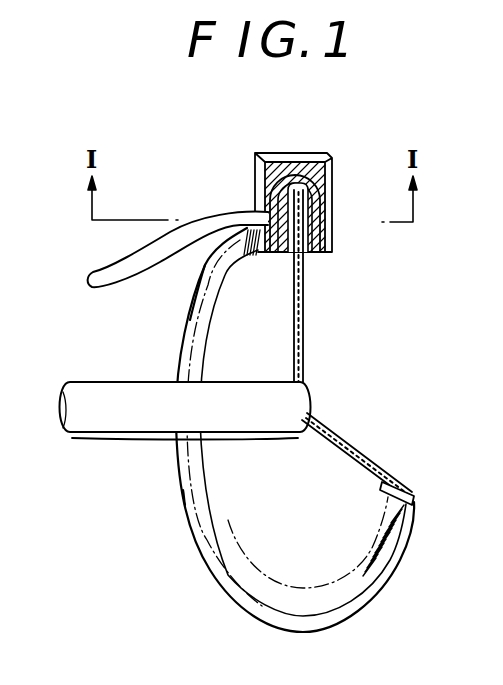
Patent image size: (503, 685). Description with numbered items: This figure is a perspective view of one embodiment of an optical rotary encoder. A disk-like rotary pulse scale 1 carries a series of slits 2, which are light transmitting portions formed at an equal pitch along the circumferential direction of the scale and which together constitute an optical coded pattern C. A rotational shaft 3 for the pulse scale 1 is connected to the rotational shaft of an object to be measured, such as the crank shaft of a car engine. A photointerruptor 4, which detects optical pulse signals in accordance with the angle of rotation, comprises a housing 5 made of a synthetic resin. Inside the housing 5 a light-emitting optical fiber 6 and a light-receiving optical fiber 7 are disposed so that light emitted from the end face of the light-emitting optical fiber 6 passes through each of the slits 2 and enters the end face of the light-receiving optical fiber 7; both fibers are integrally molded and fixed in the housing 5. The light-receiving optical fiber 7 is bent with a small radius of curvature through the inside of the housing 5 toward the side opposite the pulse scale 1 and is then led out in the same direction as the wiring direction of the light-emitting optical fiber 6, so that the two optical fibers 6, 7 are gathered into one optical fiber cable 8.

The rotary pulse scale 1 is at (214, 589).
The slits 2 is at (397, 482).
The rotational shaft 3 is at (140, 443).
The photointerruptor 4 is at (315, 148).
The housing 5 is at (333, 217).
The light-emitting optical fiber 6 is at (273, 262).
The light-receiving optical fiber 7 is at (316, 255).
The optical fiber cable 8 is at (112, 268).
The optical coded pattern C is at (180, 501).